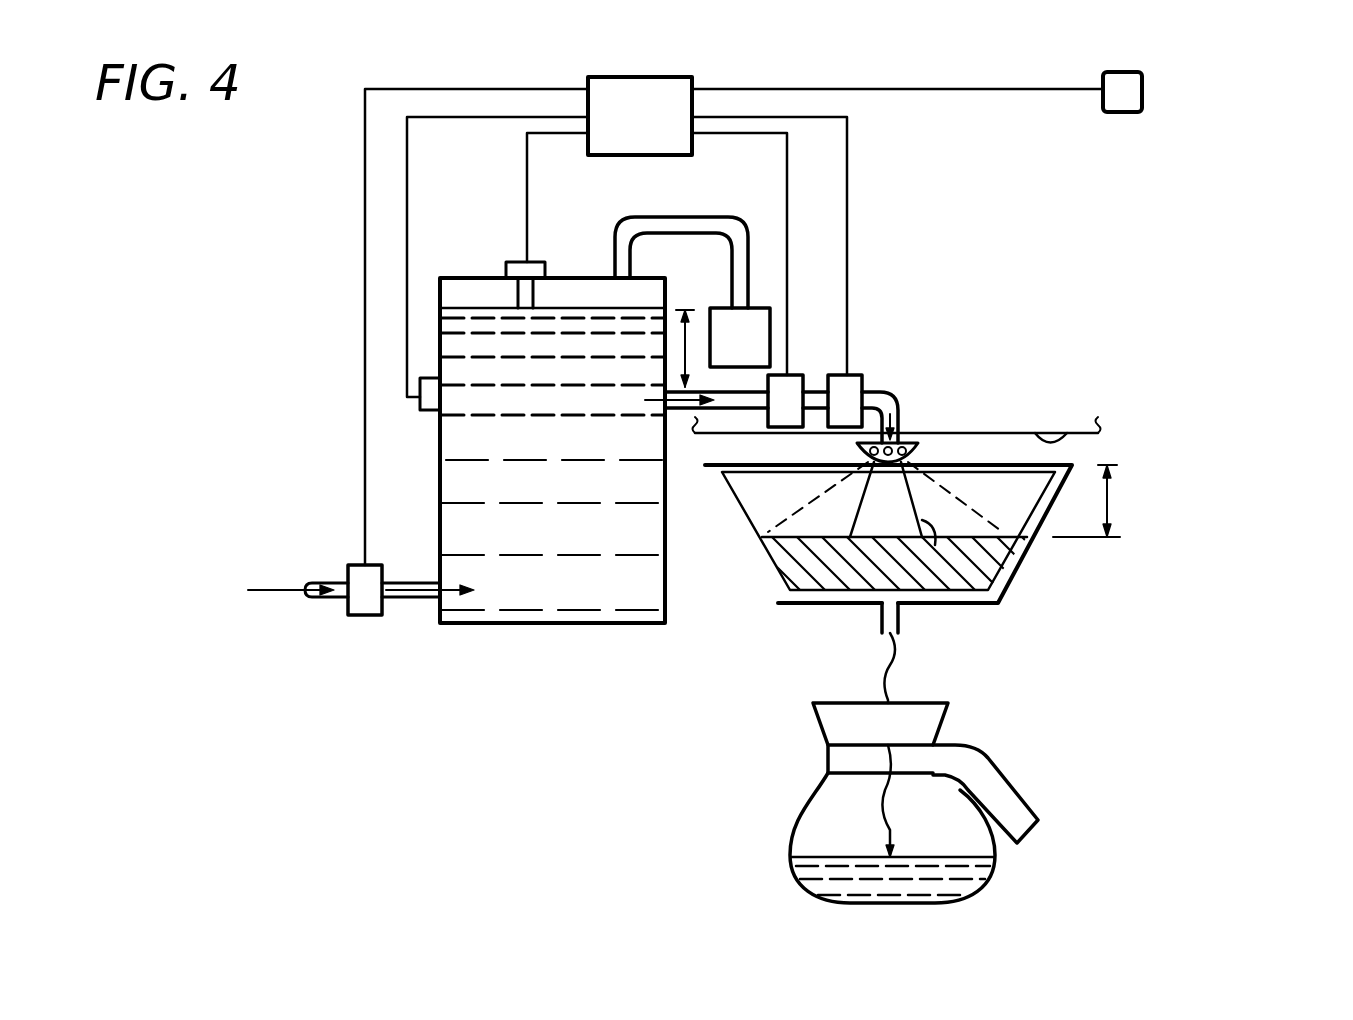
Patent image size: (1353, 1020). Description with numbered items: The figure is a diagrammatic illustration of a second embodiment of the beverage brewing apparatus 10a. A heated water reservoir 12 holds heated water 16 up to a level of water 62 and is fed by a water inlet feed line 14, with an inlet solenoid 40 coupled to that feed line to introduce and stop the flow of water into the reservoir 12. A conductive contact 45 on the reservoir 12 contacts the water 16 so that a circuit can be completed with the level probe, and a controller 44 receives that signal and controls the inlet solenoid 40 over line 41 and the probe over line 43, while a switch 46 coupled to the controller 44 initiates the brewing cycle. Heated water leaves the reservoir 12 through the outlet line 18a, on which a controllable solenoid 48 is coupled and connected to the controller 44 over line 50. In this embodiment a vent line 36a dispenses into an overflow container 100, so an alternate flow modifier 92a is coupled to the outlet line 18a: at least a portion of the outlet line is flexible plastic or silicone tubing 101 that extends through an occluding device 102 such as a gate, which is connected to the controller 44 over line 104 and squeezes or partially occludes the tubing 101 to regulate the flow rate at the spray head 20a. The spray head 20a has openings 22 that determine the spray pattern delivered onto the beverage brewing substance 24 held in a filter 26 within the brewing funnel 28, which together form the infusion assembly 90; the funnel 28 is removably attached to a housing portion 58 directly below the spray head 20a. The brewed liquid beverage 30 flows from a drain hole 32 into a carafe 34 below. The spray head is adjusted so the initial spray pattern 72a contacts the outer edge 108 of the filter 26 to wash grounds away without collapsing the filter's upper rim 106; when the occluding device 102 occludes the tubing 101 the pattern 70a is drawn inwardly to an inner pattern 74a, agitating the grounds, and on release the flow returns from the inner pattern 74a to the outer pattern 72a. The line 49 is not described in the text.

The beverage brewing apparatus 10a is at (1188, 202).
The heated water reservoir 12 is at (580, 623).
The water inlet feed line 14 is at (318, 598).
The heated water 16 is at (528, 585).
The outlet line 18a is at (880, 398).
The spray head 20a is at (855, 452).
The openings 22 is at (888, 462).
The beverage brewing substance 24 is at (833, 575).
The filter 26 is at (770, 570).
The brewing funnel 28 is at (770, 595).
The liquid beverage 30 is at (885, 688).
The drain hole 32 is at (897, 615).
The carafe 34 is at (797, 832).
The vent line 36a is at (722, 217).
The inlet solenoid 40 is at (365, 615).
The line 41 is at (365, 428).
The line 43 is at (527, 173).
The controller 44 is at (632, 77).
The conductive contact 45 is at (432, 412).
The switch 46 is at (1142, 90).
The controllable solenoid 48 is at (850, 375).
The control line 49 is at (407, 228).
The line 50 is at (847, 178).
The housing portion 58 is at (1065, 435).
The level of water 62 is at (568, 308).
The spray pattern 70a is at (1002, 527).
The initial spray pattern 72a is at (978, 500).
The inner pattern 74a is at (928, 525).
The infusion assembly 90 is at (1200, 556).
The flow modifier 92a is at (1070, 352).
The overflow container 100 is at (735, 308).
The flexible tubing 101 is at (765, 392).
The occluding device 102 is at (790, 375).
The line 104 is at (787, 180).
The upper rim 106 is at (1062, 465).
The outer edge 108 is at (1000, 527).